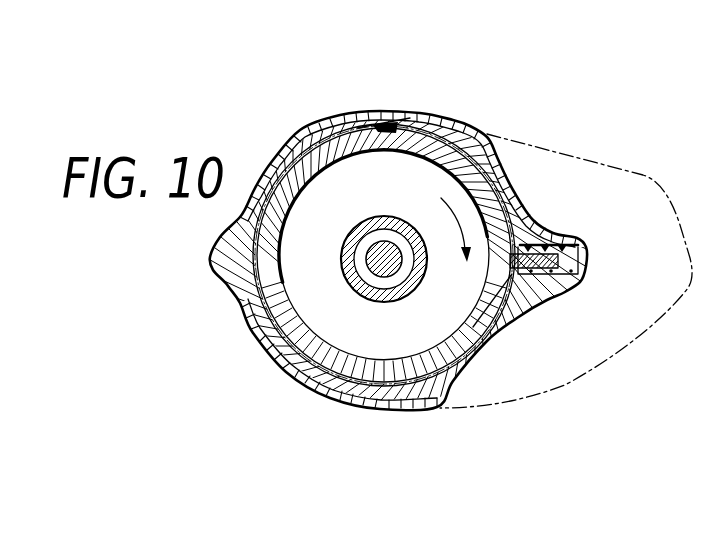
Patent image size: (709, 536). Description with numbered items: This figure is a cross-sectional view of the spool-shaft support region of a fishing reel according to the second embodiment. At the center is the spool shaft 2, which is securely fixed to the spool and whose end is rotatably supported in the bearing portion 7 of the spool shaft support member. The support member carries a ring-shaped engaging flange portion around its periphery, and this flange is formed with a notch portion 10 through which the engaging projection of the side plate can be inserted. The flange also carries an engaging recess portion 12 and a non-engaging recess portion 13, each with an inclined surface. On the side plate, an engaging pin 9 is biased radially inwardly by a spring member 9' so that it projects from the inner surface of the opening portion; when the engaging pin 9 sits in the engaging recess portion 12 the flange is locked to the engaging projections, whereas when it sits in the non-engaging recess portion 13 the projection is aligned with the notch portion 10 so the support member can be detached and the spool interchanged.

The spool shaft 2 is at (366, 262).
The bearing portion 7 is at (383, 232).
The engaging pin 9 is at (539, 329).
The spring member 9' is at (564, 323).
The notch portion 10 is at (308, 152).
The engaging recess portion 12 is at (512, 272).
The non-engaging recess portion 13 is at (390, 121).